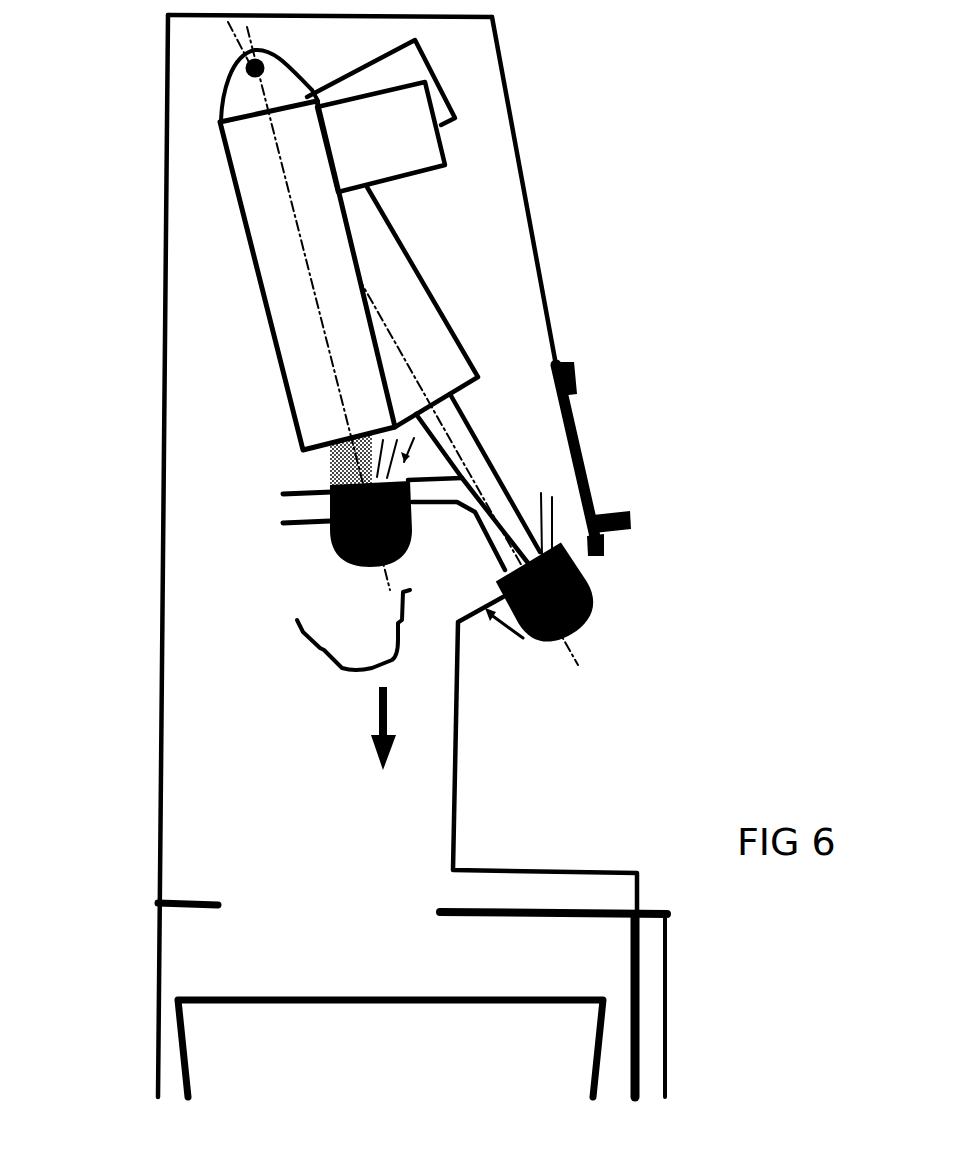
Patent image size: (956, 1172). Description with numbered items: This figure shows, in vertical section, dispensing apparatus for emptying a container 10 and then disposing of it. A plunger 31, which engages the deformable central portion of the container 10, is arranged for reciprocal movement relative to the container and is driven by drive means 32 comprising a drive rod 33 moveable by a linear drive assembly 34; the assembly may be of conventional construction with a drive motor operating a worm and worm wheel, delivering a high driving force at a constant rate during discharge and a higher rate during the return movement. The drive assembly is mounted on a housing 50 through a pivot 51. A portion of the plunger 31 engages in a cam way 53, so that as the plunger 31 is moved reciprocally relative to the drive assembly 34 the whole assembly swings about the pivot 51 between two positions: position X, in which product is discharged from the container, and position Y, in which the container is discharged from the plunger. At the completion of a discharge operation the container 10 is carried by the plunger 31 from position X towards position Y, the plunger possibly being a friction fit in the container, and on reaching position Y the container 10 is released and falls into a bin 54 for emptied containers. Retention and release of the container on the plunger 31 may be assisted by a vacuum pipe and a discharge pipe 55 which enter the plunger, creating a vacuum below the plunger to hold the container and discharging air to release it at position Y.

The container 10 is at (285, 660).
The plunger 31 is at (340, 552).
The drive means 32 is at (205, 298).
The drive rod 33 is at (473, 427).
The linear drive assembly 34 is at (335, 235).
The housing 50 is at (165, 752).
The pivot 51 is at (243, 66).
The cam way 53 is at (307, 493).
The bin 54 is at (183, 1028).
The discharge pipe 55 is at (398, 478).
The position X is at (598, 657).
The position Y is at (280, 541).